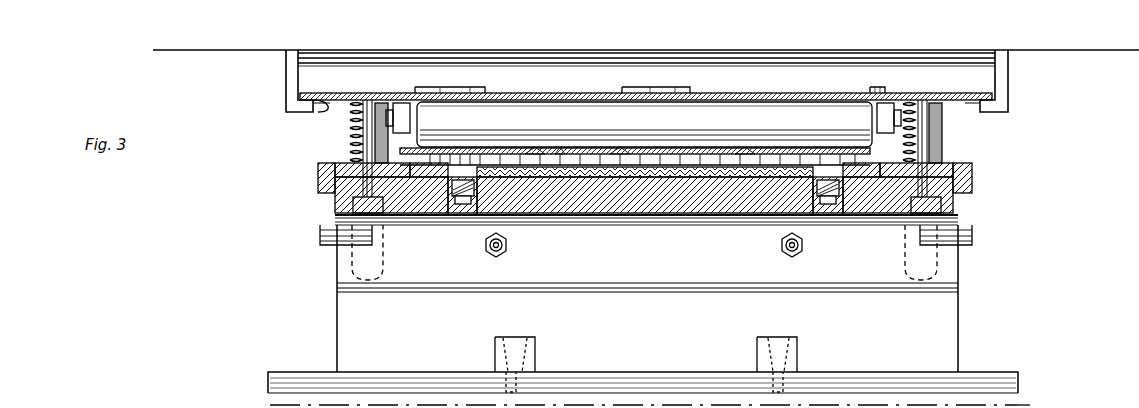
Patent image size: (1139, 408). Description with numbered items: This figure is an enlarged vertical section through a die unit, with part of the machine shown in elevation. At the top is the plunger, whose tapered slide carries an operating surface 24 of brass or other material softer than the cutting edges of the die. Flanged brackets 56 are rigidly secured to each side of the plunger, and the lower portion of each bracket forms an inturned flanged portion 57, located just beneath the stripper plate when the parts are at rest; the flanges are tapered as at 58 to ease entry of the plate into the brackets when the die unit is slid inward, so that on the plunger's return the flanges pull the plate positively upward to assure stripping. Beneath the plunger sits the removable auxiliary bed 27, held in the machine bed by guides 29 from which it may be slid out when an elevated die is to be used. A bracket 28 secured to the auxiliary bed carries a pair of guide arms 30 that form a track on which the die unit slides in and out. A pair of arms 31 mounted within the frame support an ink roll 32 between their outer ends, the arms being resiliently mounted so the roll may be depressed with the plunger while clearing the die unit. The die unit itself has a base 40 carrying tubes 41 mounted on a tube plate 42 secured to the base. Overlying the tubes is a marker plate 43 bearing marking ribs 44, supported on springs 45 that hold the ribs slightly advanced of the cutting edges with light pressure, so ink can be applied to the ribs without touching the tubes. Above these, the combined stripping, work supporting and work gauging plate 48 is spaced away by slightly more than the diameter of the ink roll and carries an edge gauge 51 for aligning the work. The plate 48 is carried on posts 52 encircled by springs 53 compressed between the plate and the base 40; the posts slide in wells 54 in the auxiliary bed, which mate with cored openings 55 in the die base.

The operating surface 24 is at (782, 68).
The auxiliary bed 27 is at (948, 330).
The bracket 28 is at (690, 282).
The guides 29 is at (530, 345).
The guide arms 30 is at (332, 238).
The arms 31 is at (400, 112).
The ink roll 32 is at (815, 118).
The base 40 is at (660, 190).
The tubes 41 is at (758, 172).
The tube plate 42 is at (760, 170).
The marker plate 43 is at (595, 175).
The marking ribs 44 is at (540, 148).
The springs 45 is at (462, 200).
The stripping, work supporting and work gauging plate 48 is at (960, 95).
The edge gauge 51 is at (462, 90).
The posts 52 is at (370, 183).
The springs 53 is at (350, 148).
The wells 54 is at (352, 267).
The cored openings 55 is at (340, 213).
The flanged brackets 56 is at (286, 77).
The inturned flanged portion 57 is at (302, 112).
The taper 58 is at (1028, 97).